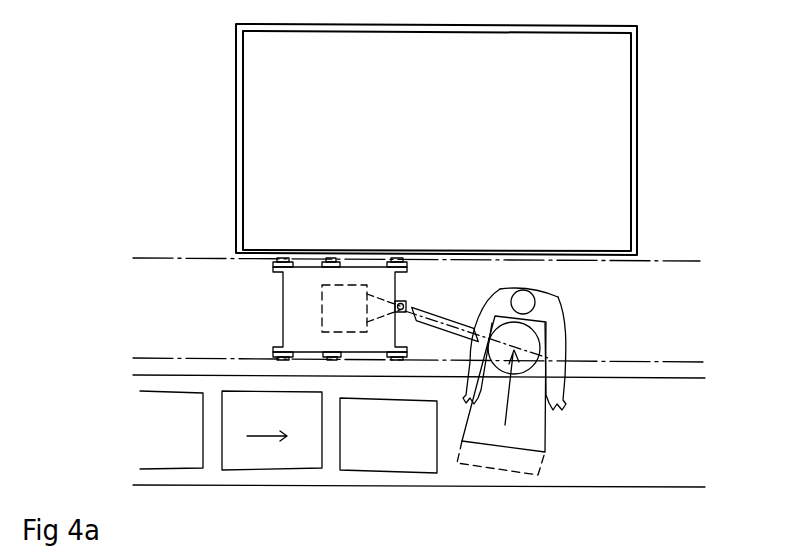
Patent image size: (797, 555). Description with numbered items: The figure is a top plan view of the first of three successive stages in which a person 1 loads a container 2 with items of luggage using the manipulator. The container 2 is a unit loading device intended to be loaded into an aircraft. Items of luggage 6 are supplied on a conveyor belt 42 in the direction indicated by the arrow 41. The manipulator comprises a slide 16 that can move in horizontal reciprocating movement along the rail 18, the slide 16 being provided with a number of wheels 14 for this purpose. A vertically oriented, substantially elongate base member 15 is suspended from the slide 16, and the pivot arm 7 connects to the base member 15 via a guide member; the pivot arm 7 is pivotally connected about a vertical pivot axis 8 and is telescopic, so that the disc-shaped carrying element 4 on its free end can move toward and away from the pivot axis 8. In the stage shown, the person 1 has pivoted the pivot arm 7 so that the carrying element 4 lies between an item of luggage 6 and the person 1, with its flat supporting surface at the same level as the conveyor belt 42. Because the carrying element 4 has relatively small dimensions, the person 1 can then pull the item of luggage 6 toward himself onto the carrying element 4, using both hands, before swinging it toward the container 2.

The person 1 is at (540, 307).
The container 2 is at (637, 68).
The carrying element 4 is at (527, 338).
The item of luggage 6 is at (538, 421).
The pivot arm 7 is at (452, 318).
The pivot axis 8 is at (404, 299).
The wheels 14 is at (401, 262).
The base member 15 is at (332, 310).
The slide 16 is at (307, 274).
The rail 18 is at (702, 261).
The arrow 41 is at (273, 440).
The conveyor belt 42 is at (642, 470).